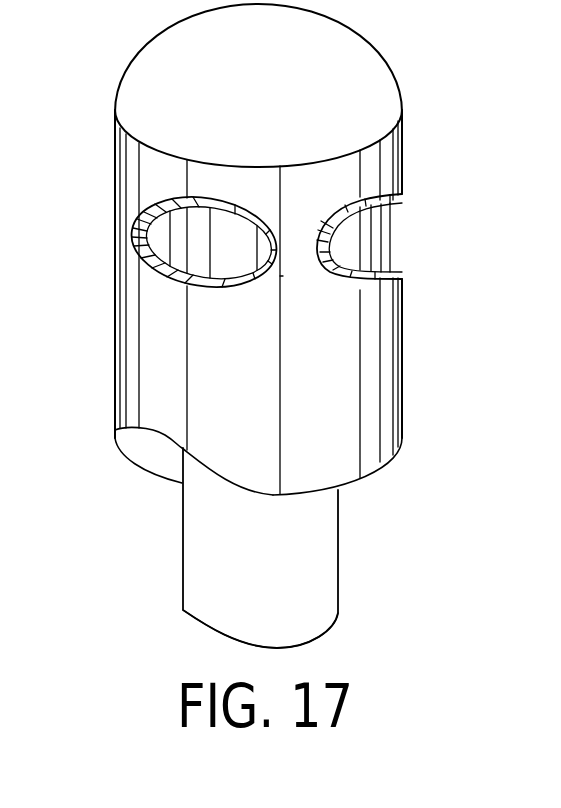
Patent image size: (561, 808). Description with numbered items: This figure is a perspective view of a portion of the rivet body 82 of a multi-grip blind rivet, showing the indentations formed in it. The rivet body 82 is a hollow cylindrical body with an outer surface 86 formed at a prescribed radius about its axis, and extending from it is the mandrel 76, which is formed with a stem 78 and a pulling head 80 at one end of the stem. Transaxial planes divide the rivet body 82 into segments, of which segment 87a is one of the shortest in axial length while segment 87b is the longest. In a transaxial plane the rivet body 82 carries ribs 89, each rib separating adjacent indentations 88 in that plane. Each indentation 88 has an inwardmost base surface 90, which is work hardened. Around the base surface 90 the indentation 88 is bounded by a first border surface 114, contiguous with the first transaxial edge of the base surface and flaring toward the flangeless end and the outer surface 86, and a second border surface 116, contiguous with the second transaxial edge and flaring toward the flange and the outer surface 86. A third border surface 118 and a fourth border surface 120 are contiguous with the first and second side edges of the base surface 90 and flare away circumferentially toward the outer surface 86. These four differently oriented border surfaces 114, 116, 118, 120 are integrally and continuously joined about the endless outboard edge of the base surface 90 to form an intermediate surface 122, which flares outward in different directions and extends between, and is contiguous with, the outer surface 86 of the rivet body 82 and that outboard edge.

The mandrel 76 is at (343, 530).
The stem 78 is at (332, 578).
The pulling head 80 is at (362, 47).
The rivet body 82 is at (406, 129).
The outer surface 86 is at (382, 360).
The segment 87a is at (362, 182).
The segment 87b is at (337, 408).
The indentation 88 is at (405, 217).
The rib 89 is at (295, 248).
The base surface 90 is at (370, 237).
The first border surface 114 is at (213, 197).
The second border surface 116 is at (218, 288).
The third border surface 118 is at (136, 225).
The fourth border surface 120 is at (283, 276).
The intermediate surface 122 is at (149, 268).